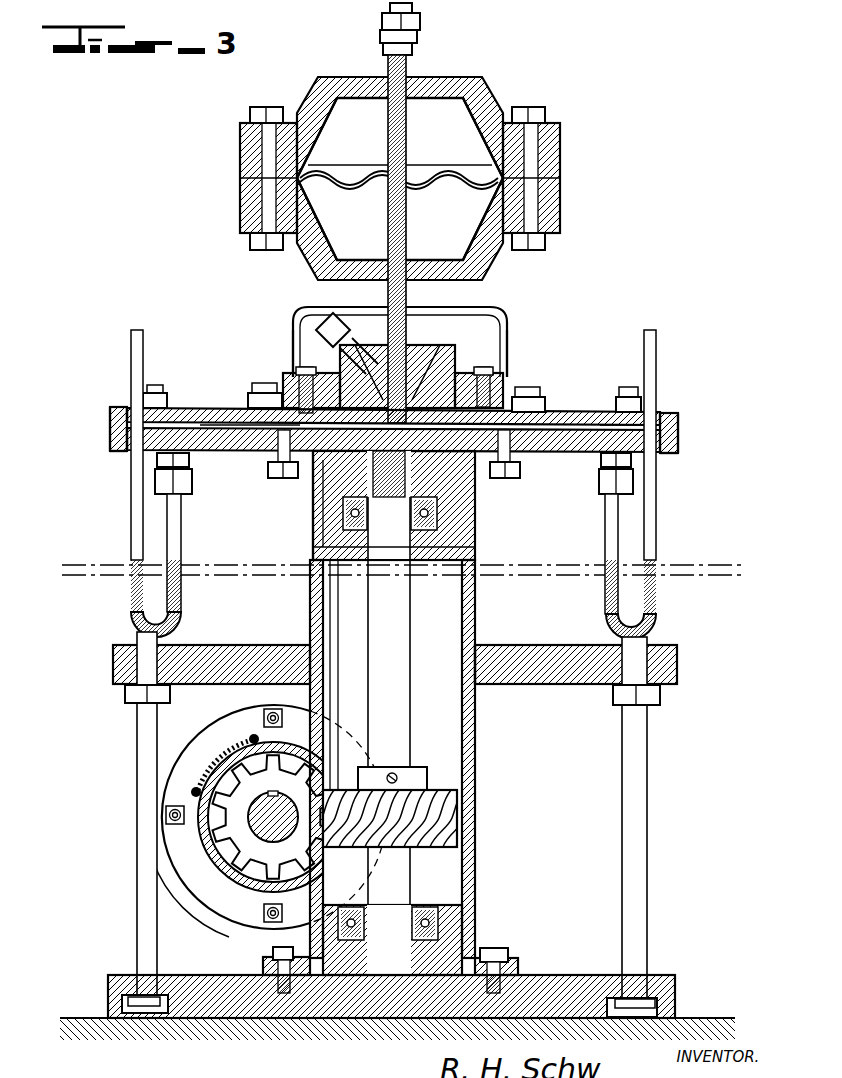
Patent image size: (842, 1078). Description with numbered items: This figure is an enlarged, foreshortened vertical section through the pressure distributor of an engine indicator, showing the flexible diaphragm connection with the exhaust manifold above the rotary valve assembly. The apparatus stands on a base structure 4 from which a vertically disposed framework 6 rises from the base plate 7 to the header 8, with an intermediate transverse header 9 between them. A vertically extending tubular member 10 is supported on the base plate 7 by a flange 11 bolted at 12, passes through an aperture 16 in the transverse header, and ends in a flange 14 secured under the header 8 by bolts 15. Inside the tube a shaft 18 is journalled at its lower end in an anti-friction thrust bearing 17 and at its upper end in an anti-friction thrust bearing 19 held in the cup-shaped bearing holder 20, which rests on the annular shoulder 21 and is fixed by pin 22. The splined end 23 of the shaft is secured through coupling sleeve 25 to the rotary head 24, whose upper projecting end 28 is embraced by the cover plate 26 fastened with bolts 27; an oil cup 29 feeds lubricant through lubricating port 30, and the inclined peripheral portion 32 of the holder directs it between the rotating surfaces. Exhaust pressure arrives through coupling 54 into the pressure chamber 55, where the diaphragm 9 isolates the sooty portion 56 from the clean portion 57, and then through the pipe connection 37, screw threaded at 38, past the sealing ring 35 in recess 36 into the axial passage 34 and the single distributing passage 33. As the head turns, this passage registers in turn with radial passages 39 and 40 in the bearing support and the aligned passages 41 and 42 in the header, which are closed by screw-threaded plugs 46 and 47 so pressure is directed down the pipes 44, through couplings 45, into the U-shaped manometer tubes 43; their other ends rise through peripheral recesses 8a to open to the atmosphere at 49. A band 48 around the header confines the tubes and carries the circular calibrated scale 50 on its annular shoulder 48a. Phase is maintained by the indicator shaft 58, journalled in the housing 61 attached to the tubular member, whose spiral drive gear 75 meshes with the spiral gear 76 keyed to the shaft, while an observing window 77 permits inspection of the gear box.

The base structure 4 is at (695, 1018).
The vertically disposed framework 6 is at (140, 825).
The base plate 7 is at (678, 978).
The header 8 is at (520, 420).
The peripheral recesses 8a is at (130, 460).
The diaphragm 9 is at (393, 198).
The tubular member 10 is at (300, 556).
The flange 11 is at (520, 962).
The bolts 12 is at (502, 950).
The flange 14 is at (500, 463).
The bolts 15 is at (498, 478).
The aperture 16 is at (480, 678).
The anti-friction thrust bearing 17 is at (437, 905).
The shaft 18 is at (389, 613).
The anti-friction thrust bearing 19 is at (316, 522).
The bearing holder 20 is at (477, 558).
The annular shoulder 21 is at (313, 556).
The pin 22 is at (477, 513).
The splined end 23 is at (325, 480).
The rotary head 24 is at (500, 360).
The coupling sleeve 25 is at (505, 385).
The cover plate 26 is at (478, 332).
The bolts 27 is at (245, 395).
The upper projecting end 28 is at (490, 345).
The oil cup 29 is at (318, 312).
The lubricating port 30 is at (340, 348).
The inclined peripheral portion 32 is at (252, 394).
The distributing passage 33 is at (270, 470).
The axial passage 34 is at (447, 345).
The sealing ring 35 is at (408, 345).
The recess 36 is at (299, 370).
The pipe connection 37 is at (388, 328).
The screw threaded connection 38 is at (330, 316).
The radial passage 39 is at (268, 450).
The radial passage 40 is at (548, 396).
The radial passage 41 is at (176, 395).
The radial passage 42 is at (592, 410).
The manometer tubes 43 is at (656, 520).
The pipe 44 is at (157, 470).
The coupling 45 is at (160, 497).
The screw-threaded plug 46 is at (143, 385).
The screw-threaded plug 47 is at (668, 402).
The band 48 is at (672, 414).
The annular shoulder 48a is at (680, 452).
The atmospheric opening 49 is at (656, 345).
The circular calibrated scale 50 is at (680, 427).
The coupling 54 is at (412, 33).
The pressure chamber 55 is at (496, 100).
The exhaust side portion 56 is at (432, 108).
The indicator side portion 57 is at (468, 217).
The indicator shaft 58 is at (232, 915).
The housing 61 is at (165, 868).
The spiral drive gear 75 is at (182, 895).
The spiral gear 76 is at (470, 808).
The observing window 77 is at (196, 787).